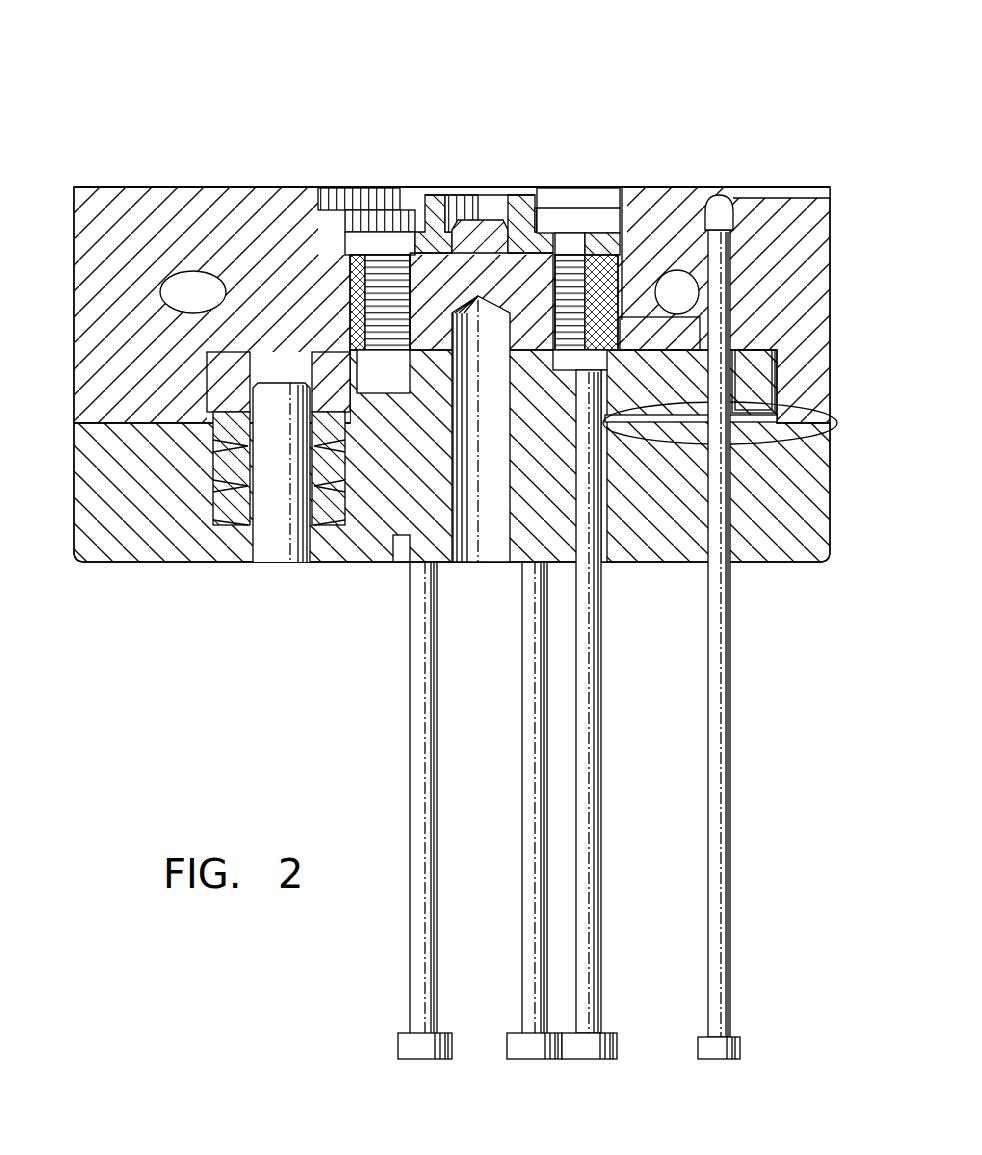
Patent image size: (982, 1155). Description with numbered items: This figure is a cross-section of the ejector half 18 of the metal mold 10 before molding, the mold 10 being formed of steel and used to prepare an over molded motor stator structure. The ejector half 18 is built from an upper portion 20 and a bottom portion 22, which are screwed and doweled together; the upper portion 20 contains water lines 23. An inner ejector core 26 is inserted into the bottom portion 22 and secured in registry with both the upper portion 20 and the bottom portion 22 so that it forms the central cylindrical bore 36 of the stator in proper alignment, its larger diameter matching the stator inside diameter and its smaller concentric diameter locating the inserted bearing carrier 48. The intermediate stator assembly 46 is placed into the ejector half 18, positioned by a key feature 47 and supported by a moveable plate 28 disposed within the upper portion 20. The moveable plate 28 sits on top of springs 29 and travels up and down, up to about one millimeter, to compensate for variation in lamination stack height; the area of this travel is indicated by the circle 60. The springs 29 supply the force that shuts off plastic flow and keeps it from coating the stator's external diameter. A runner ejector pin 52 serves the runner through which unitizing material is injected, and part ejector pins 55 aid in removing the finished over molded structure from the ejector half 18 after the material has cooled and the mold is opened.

The metal mold 10 is at (78, 100).
The ejector half 18 is at (138, 172).
The upper portion 20 is at (74, 236).
The bottom portion 22 is at (74, 520).
The water lines 23 is at (193, 275).
The inner ejector core 26 is at (497, 220).
The moveable plate 28 is at (748, 398).
The springs 29 is at (225, 468).
The central cylindrical bore 36 is at (567, 298).
The intermediate stator assembly 46 is at (372, 296).
The key feature 47 is at (648, 317).
The bearing carrier 48 is at (455, 222).
The runner ejector pin 52 is at (716, 228).
The part ejector pins 55 is at (413, 1058).
The circle 60 is at (800, 440).